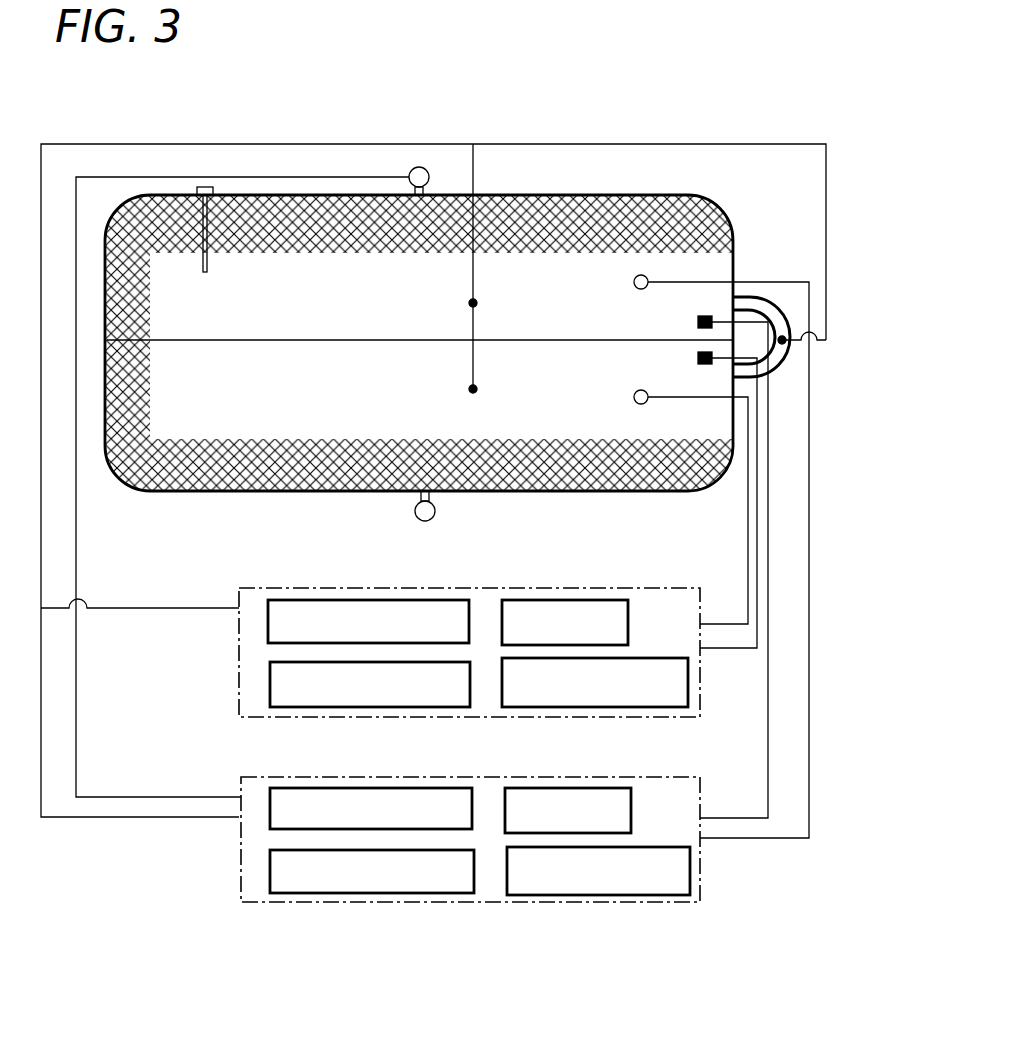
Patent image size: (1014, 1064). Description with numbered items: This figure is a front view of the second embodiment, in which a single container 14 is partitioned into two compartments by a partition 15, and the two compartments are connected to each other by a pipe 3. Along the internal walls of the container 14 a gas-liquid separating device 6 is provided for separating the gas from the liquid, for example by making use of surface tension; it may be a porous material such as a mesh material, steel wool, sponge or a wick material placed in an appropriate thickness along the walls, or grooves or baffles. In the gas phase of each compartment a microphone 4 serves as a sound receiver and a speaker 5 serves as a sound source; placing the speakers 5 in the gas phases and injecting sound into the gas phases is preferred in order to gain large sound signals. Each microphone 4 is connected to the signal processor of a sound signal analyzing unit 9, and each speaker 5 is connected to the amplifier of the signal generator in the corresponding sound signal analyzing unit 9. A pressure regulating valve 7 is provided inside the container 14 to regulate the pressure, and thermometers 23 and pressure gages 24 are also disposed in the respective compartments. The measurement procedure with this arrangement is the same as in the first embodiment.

The pipe 3 is at (791, 354).
The microphone 4 is at (698, 322).
The speaker 5 is at (635, 286).
The gas-liquid separating device 6 is at (220, 492).
The pressure regulating valve 7 is at (204, 187).
The sound signal analyzing unit 9 is at (239, 645).
The container 14 is at (508, 194).
The partition 15 is at (575, 340).
The thermometer 23 is at (470, 303).
The pressure gage 24 is at (418, 167).